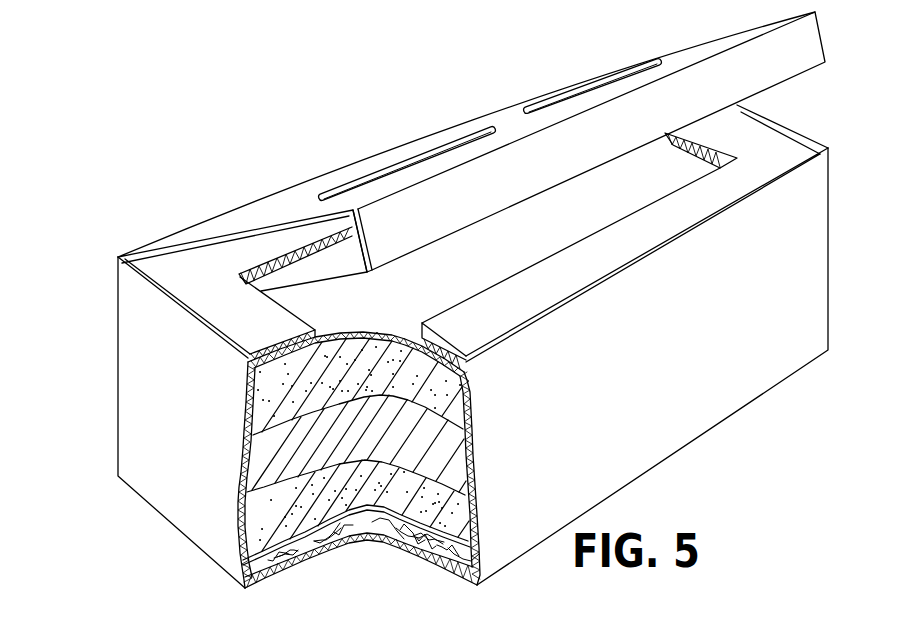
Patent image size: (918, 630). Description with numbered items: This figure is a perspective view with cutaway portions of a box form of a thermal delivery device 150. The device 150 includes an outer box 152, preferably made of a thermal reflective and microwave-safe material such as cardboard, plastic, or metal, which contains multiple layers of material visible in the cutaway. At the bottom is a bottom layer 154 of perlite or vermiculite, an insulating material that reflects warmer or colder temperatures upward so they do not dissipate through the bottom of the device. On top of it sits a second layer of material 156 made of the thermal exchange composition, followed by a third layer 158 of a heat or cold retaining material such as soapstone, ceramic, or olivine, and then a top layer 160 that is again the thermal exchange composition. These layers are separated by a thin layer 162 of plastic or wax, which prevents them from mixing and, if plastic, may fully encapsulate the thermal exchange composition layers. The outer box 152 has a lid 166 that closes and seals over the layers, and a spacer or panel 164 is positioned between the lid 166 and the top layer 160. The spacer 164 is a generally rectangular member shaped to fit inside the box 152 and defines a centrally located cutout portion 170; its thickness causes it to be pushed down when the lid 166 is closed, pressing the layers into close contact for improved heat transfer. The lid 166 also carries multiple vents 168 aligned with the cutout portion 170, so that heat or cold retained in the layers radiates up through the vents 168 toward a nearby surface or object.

The thermal delivery device 150 is at (100, 233).
The outer box 152 is at (137, 390).
The bottom layer 154 is at (355, 528).
The second layer of material 156 is at (480, 508).
The third layer 158 is at (473, 452).
The top layer 160 is at (473, 395).
The thin layer 162 is at (248, 386).
The spacer or panel 164 is at (565, 284).
The lid 166 is at (281, 201).
The vents 168 is at (436, 155).
The cutout portion 170 is at (604, 214).